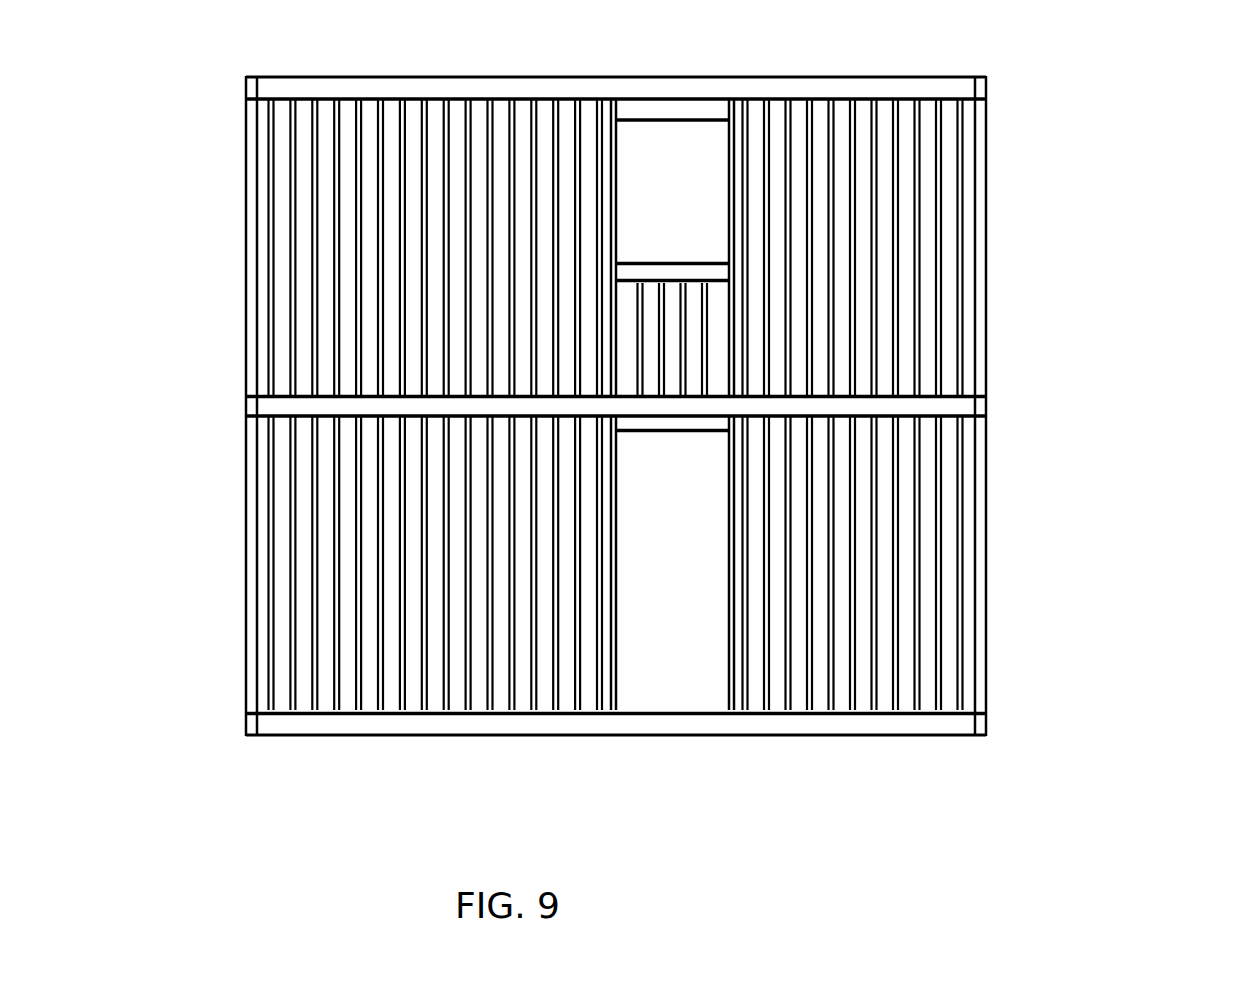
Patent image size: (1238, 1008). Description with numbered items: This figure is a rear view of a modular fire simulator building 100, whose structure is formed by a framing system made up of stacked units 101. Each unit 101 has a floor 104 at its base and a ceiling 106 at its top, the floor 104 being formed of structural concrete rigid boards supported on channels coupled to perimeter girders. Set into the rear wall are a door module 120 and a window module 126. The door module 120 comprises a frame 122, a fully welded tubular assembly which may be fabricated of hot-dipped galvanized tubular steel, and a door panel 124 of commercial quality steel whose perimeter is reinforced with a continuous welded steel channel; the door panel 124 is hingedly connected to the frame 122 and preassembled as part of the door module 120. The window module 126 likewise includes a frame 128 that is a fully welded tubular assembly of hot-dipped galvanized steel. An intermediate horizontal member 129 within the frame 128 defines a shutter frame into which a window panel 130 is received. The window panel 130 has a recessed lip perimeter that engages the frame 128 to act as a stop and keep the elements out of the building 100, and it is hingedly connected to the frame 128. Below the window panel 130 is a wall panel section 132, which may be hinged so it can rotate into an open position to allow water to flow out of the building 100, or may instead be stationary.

The modular fire simulator building 100 is at (147, 205).
The unit 101 is at (992, 250).
The floor 104 is at (945, 725).
The ceiling 106 is at (948, 95).
The door module 120 is at (677, 627).
The frame 122 is at (733, 673).
The door panel 124 is at (688, 532).
The window module 126 is at (733, 205).
The frame 128 is at (735, 108).
The intermediate horizontal member 129 is at (651, 278).
The window panel 130 is at (618, 163).
The wall panel section 132 is at (712, 175).